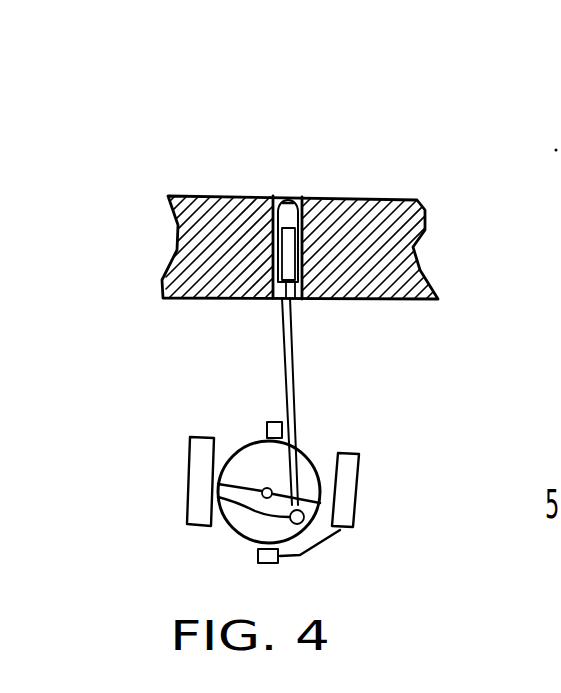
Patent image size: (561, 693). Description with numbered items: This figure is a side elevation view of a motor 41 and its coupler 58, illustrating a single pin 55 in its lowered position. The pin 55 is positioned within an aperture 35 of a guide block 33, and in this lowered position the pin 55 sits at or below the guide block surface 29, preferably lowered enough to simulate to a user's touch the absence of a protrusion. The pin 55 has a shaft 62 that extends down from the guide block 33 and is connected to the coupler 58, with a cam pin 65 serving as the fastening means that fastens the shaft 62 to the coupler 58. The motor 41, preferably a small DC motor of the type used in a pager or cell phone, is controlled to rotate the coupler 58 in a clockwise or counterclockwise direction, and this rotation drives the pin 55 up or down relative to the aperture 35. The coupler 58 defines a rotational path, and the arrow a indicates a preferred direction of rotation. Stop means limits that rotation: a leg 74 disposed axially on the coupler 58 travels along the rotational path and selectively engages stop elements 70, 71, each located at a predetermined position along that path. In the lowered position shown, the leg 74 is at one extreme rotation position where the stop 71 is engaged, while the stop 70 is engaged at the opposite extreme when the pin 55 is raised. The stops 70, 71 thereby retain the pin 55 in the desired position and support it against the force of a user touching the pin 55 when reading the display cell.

The guide block surface 29 is at (349, 198).
The guide block 33 is at (404, 200).
The aperture 35 is at (300, 203).
The motor 41 is at (308, 447).
The pin 55 is at (286, 198).
The coupler 58 is at (256, 470).
The shaft 62 is at (291, 383).
The cam pin 65 is at (218, 484).
The stop 70 is at (270, 437).
The stop 71 is at (272, 566).
The leg 74 is at (300, 566).
The arrow a is at (297, 584).